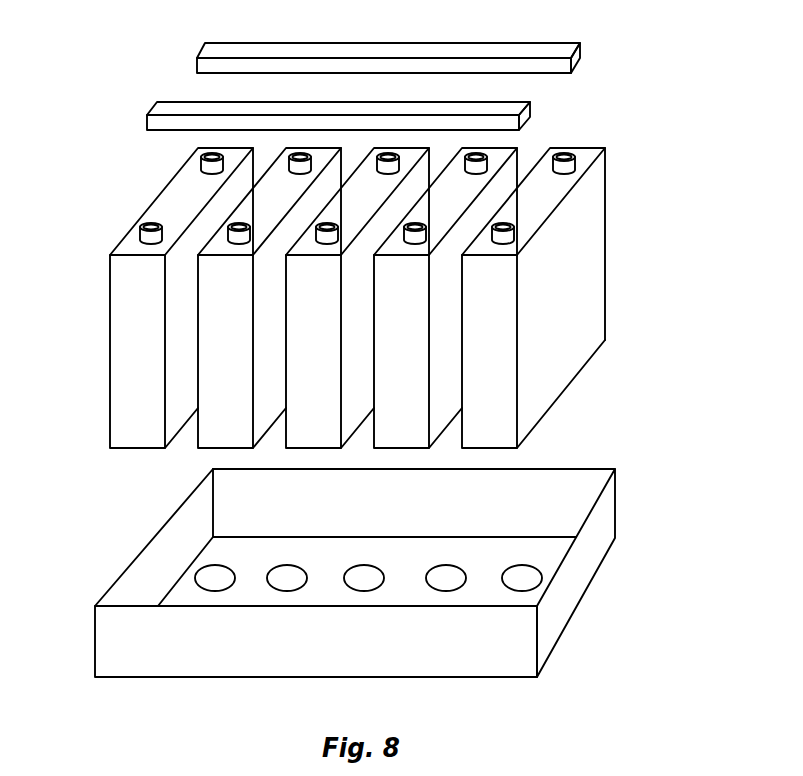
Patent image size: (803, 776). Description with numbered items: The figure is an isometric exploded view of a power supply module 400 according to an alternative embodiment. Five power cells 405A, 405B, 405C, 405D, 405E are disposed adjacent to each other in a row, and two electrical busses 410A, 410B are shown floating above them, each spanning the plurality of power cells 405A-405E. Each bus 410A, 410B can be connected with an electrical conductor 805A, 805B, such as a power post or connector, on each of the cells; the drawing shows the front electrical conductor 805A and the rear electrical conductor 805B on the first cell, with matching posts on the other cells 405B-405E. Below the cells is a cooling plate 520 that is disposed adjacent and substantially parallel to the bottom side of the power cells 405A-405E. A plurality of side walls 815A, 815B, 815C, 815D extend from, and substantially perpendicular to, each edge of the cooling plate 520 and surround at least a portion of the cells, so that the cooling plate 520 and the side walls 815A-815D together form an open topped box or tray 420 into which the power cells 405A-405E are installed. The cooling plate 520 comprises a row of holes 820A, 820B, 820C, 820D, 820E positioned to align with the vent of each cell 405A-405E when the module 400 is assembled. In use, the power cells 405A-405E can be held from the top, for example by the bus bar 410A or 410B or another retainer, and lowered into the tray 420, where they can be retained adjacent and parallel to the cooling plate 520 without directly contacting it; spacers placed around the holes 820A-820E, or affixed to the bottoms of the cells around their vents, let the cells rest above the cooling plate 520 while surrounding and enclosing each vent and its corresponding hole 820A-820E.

The power supply module 400 is at (645, 109).
The electrical bus 410A is at (157, 108).
The electrical bus 410B is at (552, 53).
The power cell 405A is at (155, 291).
The power cell 405B is at (250, 442).
The power cell 405C is at (338, 442).
The power cell 405D is at (426, 442).
The power cell 405E is at (514, 442).
The electrical conductor 805A is at (142, 233).
The electrical conductor 805B is at (203, 165).
The open topped box or tray 420 is at (358, 566).
The side wall 815A is at (608, 492).
The side wall 815B is at (105, 646).
The side wall 815C is at (165, 548).
The side wall 815D is at (560, 480).
The cooling plate 520 is at (402, 615).
The hole in cooling plate 820A is at (215, 583).
The hole in cooling plate 820B is at (287, 583).
The hole in cooling plate 820C is at (364, 583).
The hole in cooling plate 820D is at (446, 583).
The hole in cooling plate 820E is at (522, 583).